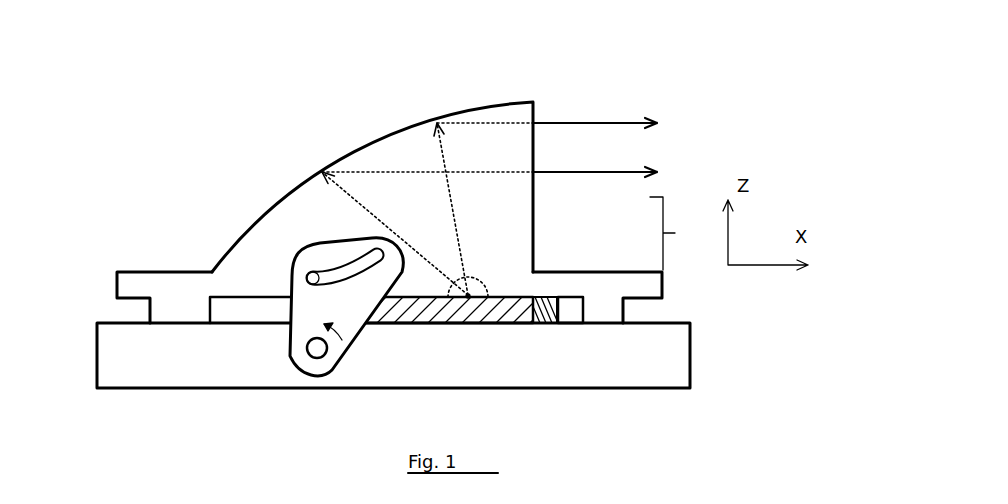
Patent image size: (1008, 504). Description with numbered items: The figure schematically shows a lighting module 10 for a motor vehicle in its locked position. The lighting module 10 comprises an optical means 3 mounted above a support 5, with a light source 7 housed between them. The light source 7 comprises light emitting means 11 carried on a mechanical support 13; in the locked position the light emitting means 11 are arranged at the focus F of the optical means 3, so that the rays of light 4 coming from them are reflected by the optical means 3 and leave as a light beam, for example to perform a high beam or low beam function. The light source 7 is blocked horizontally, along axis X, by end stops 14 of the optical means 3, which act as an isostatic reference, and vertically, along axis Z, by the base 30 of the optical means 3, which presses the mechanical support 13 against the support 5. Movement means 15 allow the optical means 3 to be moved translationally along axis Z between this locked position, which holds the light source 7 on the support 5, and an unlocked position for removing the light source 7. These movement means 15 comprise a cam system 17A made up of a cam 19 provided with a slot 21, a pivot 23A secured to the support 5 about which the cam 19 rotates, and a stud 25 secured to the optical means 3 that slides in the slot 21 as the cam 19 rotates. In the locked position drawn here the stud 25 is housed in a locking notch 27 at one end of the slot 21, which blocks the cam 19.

The lighting module 10 is at (230, 103).
The optical means 3 is at (379, 140).
The rays of light 4 is at (603, 122).
The support 5 is at (648, 360).
The light source 7 is at (671, 233).
The light emitting means 11 is at (474, 281).
The mechanical support 13 is at (536, 300).
The end stop 14 is at (552, 302).
The movement means 15 is at (428, 340).
The cam system 17A is at (458, 310).
The cam 19 is at (274, 328).
The slot 21 is at (340, 246).
The pivot 23A is at (313, 352).
The stud 25 is at (307, 276).
The locking notch 27 is at (222, 306).
The base 30 is at (130, 287).
The focal zone F is at (508, 300).